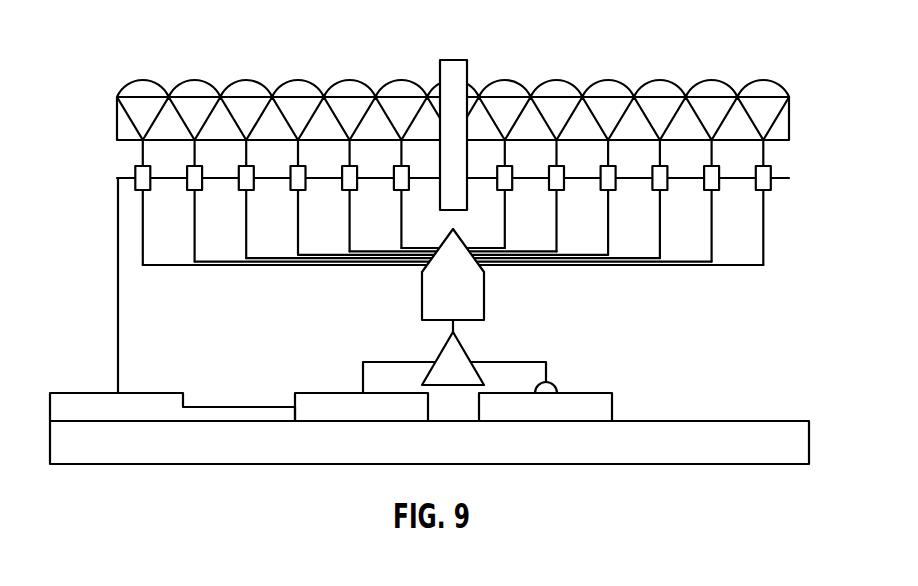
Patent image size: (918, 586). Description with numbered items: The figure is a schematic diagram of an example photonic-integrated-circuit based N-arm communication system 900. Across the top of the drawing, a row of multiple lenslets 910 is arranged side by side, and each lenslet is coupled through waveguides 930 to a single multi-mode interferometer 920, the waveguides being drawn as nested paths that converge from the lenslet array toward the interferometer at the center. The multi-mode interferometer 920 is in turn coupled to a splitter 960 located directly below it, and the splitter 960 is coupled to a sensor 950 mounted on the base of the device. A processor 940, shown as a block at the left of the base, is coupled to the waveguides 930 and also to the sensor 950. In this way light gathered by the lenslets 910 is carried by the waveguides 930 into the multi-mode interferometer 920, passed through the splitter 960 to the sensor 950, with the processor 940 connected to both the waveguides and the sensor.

The N-arm communication system 900 is at (684, 29).
The lenslets 910 is at (776, 87).
The multi-mode interferometer 920 is at (485, 293).
The waveguides 930 is at (764, 220).
The processor 940 is at (113, 393).
The sensor 950 is at (353, 393).
The splitter 960 is at (442, 350).